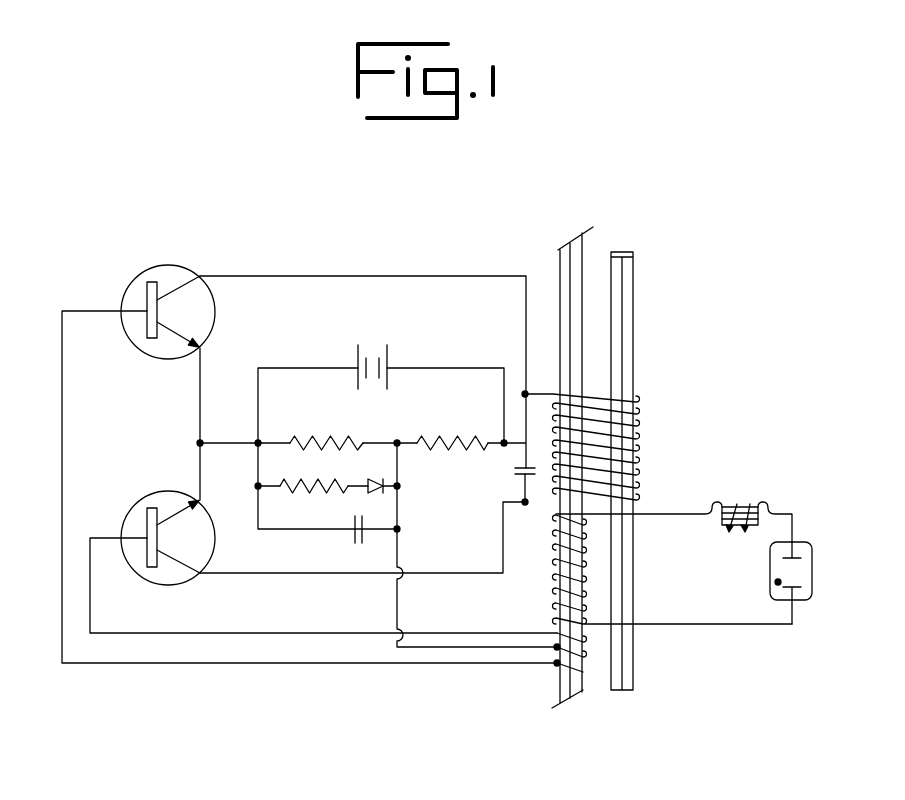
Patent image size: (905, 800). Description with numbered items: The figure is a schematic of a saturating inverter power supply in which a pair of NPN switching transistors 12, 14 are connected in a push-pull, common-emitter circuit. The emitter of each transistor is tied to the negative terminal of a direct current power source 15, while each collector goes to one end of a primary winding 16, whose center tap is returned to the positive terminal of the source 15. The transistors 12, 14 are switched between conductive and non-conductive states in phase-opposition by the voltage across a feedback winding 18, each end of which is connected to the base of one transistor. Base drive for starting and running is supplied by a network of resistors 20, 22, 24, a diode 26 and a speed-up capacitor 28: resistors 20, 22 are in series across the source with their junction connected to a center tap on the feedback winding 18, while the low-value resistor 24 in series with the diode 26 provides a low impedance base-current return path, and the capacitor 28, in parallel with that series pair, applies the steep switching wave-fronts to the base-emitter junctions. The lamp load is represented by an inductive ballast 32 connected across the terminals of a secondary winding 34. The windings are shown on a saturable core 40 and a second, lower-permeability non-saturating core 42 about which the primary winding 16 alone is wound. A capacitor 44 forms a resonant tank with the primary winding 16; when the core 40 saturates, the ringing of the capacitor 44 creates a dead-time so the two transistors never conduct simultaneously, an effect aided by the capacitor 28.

The NPN switching transistor 12 is at (215, 308).
The NPN switching transistor 14 is at (215, 550).
The direct current power source 15 is at (388, 352).
The primary winding 16 is at (645, 446).
The feedback winding 18 is at (584, 657).
The resistor 20 is at (320, 436).
The resistor 22 is at (473, 412).
The resistor 24 is at (303, 492).
The diode 26 is at (376, 478).
The speed-up capacitor 28 is at (352, 537).
The inductive ballast 32 is at (740, 502).
The secondary winding 34 is at (583, 568).
The saturable core 40 is at (558, 263).
The non-saturating core 42 is at (635, 270).
The capacitor 44 is at (512, 470).